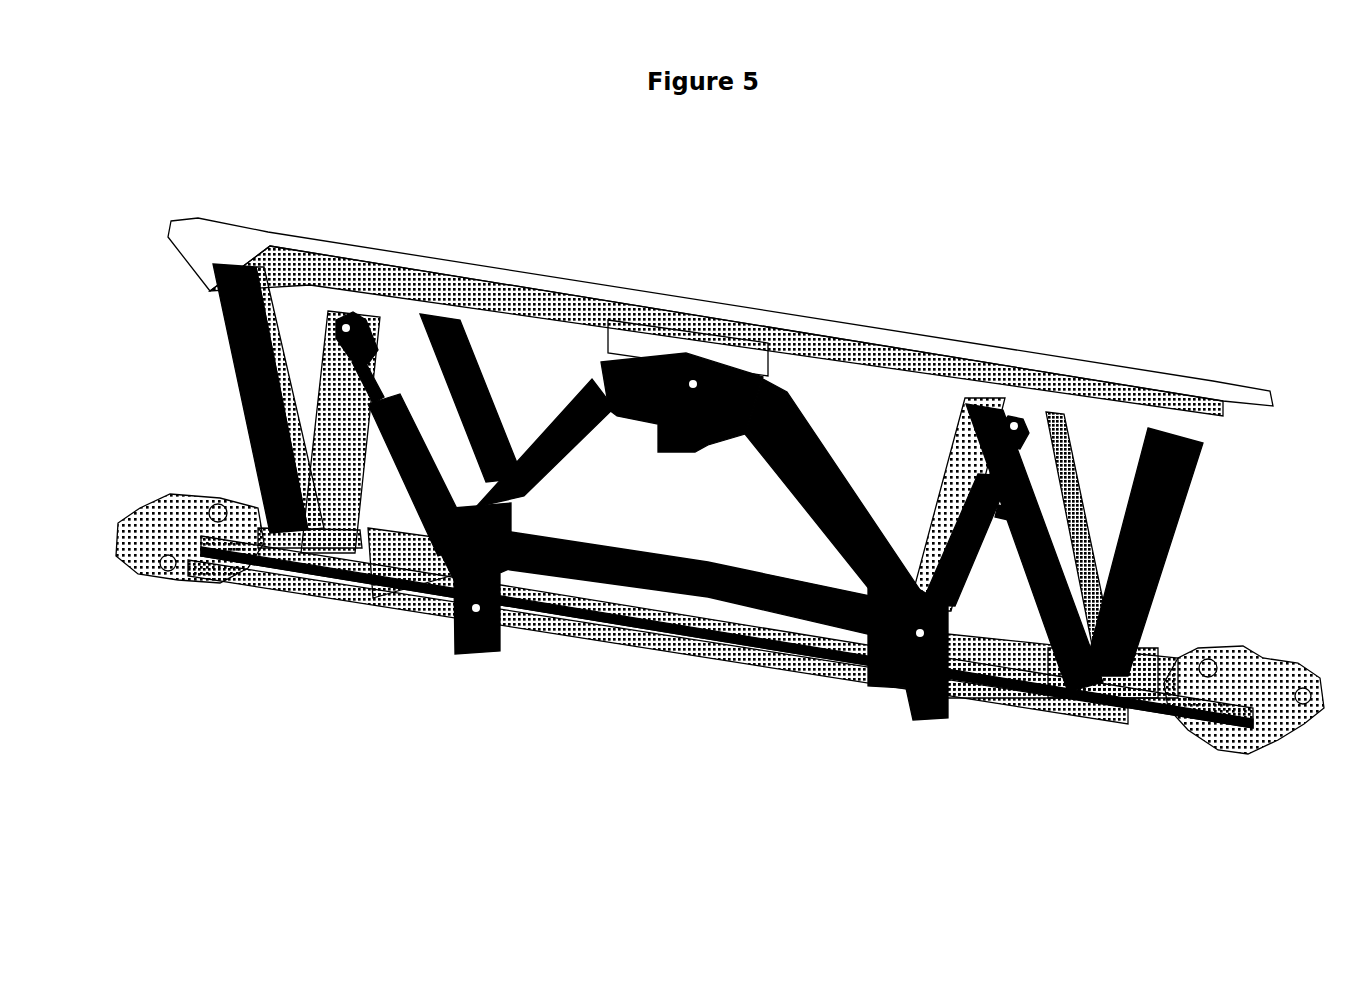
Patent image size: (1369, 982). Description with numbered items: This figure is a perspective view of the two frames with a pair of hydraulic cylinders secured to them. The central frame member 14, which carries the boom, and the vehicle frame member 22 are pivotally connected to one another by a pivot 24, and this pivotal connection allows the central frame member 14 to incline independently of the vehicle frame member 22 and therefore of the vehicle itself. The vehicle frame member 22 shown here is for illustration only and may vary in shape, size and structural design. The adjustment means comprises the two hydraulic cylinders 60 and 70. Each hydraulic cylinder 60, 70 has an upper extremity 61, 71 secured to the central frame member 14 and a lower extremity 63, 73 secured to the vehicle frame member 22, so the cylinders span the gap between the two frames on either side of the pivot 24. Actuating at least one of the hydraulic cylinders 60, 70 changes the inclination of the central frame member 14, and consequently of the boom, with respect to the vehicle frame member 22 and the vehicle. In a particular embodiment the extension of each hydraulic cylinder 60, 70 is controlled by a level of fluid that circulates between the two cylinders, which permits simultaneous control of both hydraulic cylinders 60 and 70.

The central frame member 14 is at (800, 322).
The vehicle frame member 22 is at (650, 575).
The pivot 24 is at (685, 376).
The hydraulic cylinder 60 is at (395, 398).
The upper extremity 61 is at (334, 308).
The lower extremity 63 is at (440, 562).
The hydraulic cylinder 70 is at (973, 530).
The upper extremity 71 is at (1007, 405).
The lower extremity 73 is at (912, 635).